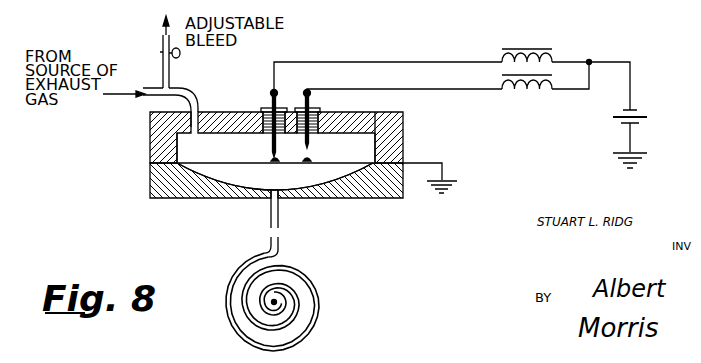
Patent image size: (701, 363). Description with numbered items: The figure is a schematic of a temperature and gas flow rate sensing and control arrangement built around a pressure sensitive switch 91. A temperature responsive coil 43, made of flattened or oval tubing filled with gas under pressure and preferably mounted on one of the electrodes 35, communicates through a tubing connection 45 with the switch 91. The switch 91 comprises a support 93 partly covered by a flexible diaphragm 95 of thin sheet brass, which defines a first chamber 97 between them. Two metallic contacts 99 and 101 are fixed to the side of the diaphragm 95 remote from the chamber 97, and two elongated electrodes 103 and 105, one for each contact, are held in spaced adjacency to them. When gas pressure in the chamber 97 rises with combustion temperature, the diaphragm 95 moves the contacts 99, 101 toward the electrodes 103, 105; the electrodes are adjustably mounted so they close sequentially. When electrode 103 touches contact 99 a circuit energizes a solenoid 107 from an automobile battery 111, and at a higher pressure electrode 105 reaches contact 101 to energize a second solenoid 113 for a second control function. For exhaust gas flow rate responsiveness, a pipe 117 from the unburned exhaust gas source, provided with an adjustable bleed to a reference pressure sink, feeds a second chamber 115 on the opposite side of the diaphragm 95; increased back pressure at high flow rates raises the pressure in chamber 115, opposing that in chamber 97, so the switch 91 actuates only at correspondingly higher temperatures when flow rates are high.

The electrode 35 is at (278, 305).
The temperature responsive coil 43 is at (317, 288).
The tubing connection 45 is at (279, 225).
The pressure sensitive switch 91 is at (403, 133).
The support 93 is at (150, 193).
The flexible diaphragm 95 is at (217, 167).
The first chamber 97 is at (317, 177).
The metallic contact 99 is at (271, 159).
The metallic contact 101 is at (311, 158).
The elongated electrode 103 is at (277, 90).
The elongated electrode 105 is at (310, 95).
The solenoid 107 is at (505, 53).
The automobile battery 111 is at (643, 113).
The second solenoid 113 is at (523, 90).
The second chamber 115 is at (220, 138).
The pipe 117 is at (179, 87).